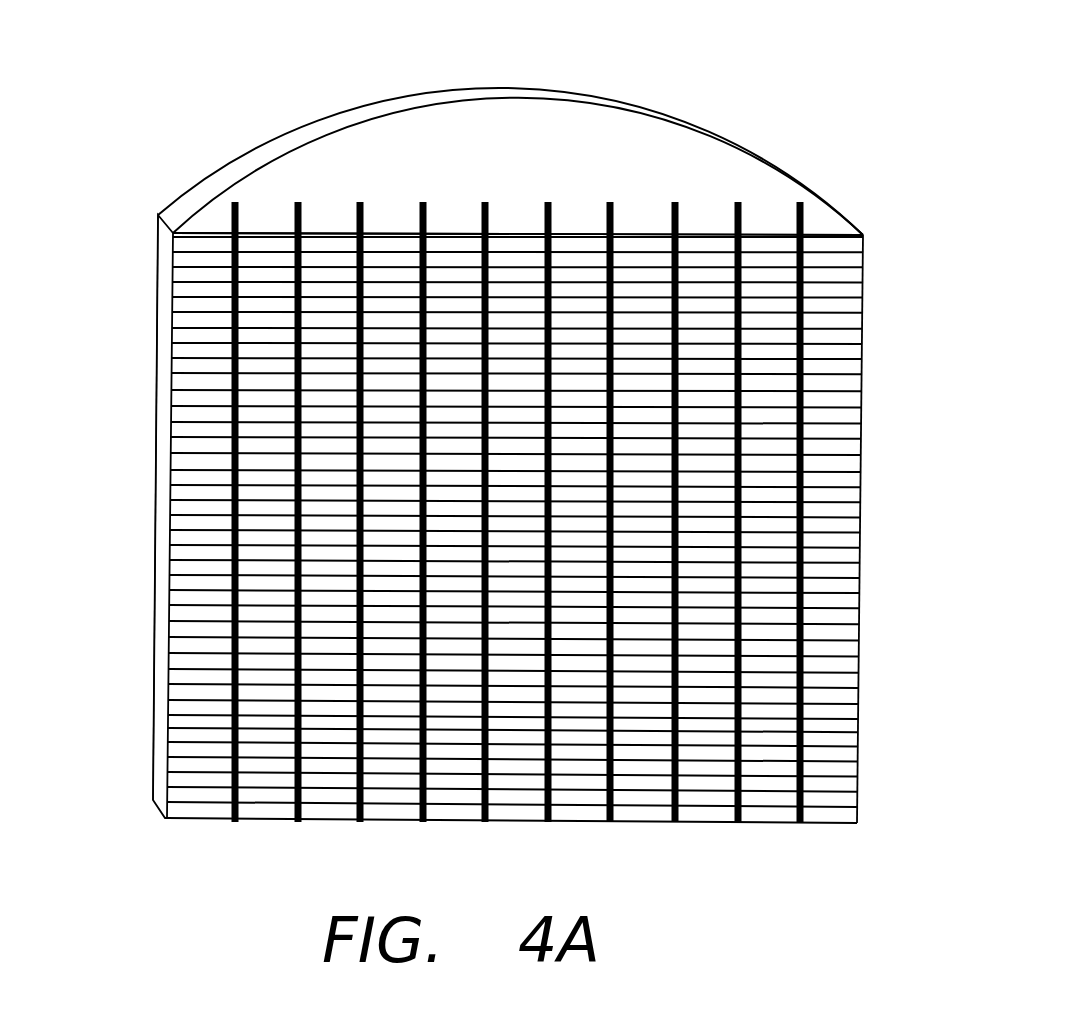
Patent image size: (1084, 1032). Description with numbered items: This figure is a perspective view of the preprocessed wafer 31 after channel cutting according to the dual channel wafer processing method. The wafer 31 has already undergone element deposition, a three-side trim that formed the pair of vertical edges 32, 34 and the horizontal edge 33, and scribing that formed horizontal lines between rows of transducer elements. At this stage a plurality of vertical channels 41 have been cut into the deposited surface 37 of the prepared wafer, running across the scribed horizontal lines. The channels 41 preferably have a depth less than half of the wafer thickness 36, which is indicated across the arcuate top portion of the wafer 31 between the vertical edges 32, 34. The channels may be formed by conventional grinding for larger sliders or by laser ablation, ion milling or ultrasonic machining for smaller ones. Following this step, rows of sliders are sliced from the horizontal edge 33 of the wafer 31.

The preprocessed wafer 31 is at (505, 85).
The vertical edge 32 is at (158, 500).
The horizontal edge 33 is at (700, 822).
The vertical edge 34 is at (860, 524).
The wafer thickness 36 is at (208, 120).
The deposited surface 37 is at (518, 182).
The vertical channels 41 is at (696, 203).